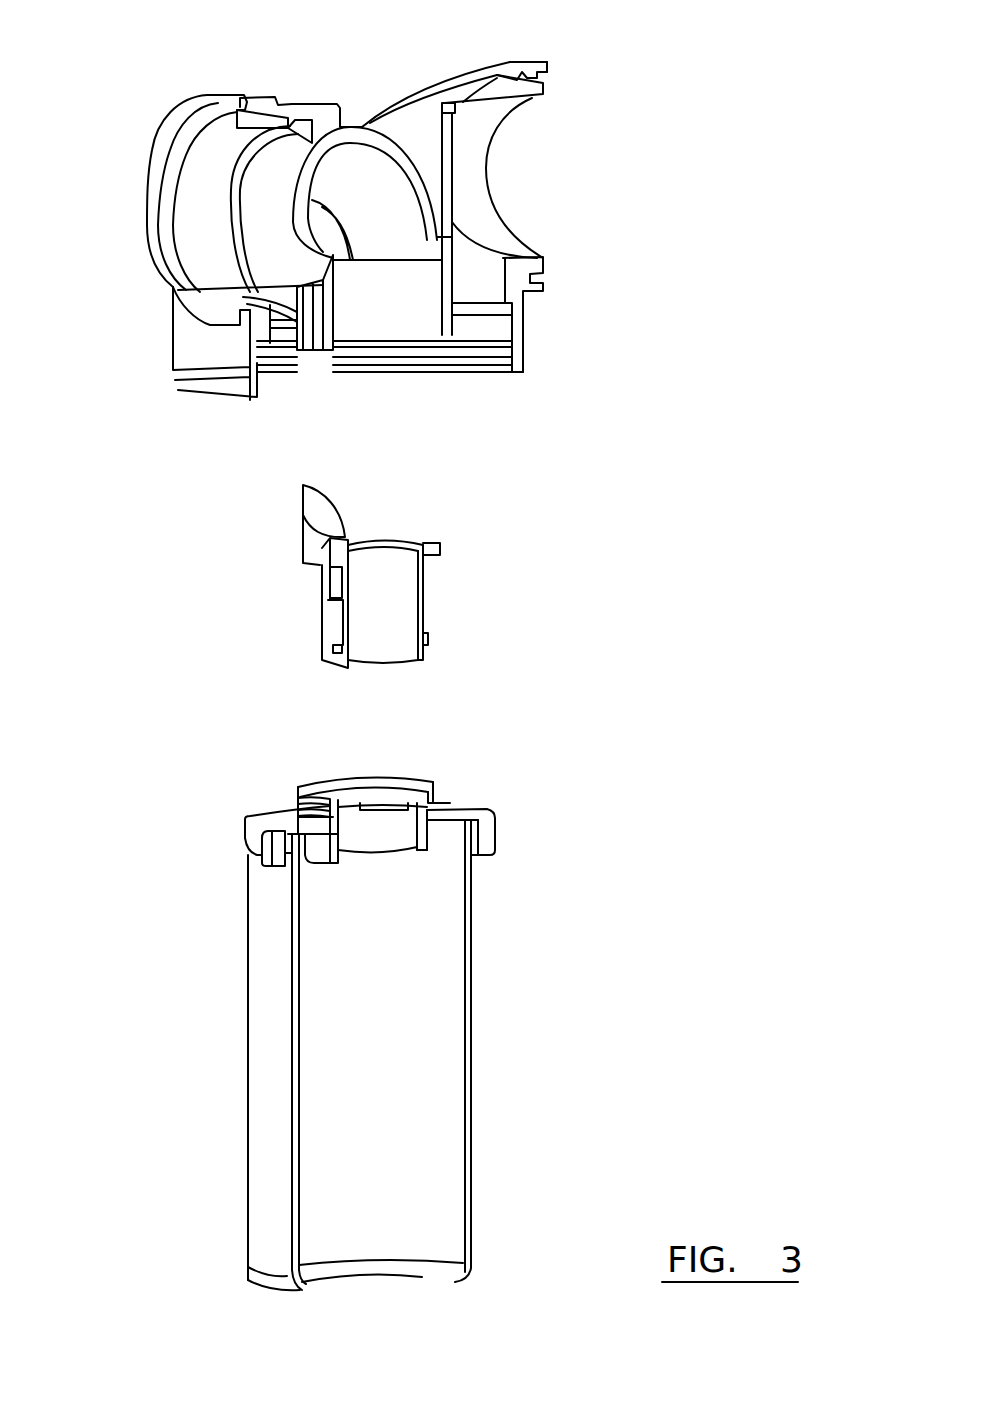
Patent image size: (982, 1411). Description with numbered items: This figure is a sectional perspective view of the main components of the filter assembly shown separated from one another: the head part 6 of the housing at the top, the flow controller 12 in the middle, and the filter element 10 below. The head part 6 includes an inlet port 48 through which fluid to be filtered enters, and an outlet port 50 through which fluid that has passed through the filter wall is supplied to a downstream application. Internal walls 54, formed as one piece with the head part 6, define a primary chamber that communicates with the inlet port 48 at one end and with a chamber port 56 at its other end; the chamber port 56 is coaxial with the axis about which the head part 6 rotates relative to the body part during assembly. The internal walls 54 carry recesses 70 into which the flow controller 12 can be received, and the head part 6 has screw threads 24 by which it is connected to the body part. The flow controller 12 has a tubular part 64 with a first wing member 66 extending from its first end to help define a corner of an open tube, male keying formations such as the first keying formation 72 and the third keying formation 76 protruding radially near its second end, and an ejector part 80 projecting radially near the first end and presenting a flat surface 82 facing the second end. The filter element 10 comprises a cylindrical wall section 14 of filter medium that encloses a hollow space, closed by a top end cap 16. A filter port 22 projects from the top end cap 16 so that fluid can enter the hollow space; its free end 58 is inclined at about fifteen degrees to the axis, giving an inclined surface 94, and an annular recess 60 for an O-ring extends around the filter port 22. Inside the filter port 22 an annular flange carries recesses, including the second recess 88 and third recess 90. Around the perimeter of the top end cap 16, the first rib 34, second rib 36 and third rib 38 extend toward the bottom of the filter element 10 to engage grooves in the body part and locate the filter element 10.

The head part 6 is at (305, 96).
The inlet port 48 is at (195, 132).
The outlet port 50 is at (549, 88).
The internal walls 54 is at (403, 177).
The recesses 70 is at (343, 208).
The chamber port 56 is at (340, 368).
The screw threads 24 is at (275, 370).
The flow controller 12 is at (407, 524).
The first wing member 66 is at (322, 507).
The ejector part 80 is at (327, 582).
The flat surface 82 is at (333, 620).
The first male keying formation 72 is at (335, 650).
The tubular part 64 is at (430, 596).
The third male keying formation 76 is at (432, 640).
The filter element 10 is at (476, 1081).
The cylindrical wall section 14 is at (297, 1128).
The second rib 36 is at (244, 818).
The first rib 34 is at (262, 861).
The third rib 38 is at (488, 832).
The top end cap 16 is at (435, 805).
The inclined surface 94 is at (388, 776).
The filter port 22 is at (438, 799).
The second recess 88 is at (351, 802).
The free end 58 is at (303, 787).
The annular recess 60 is at (296, 805).
The third recess 90 is at (418, 853).